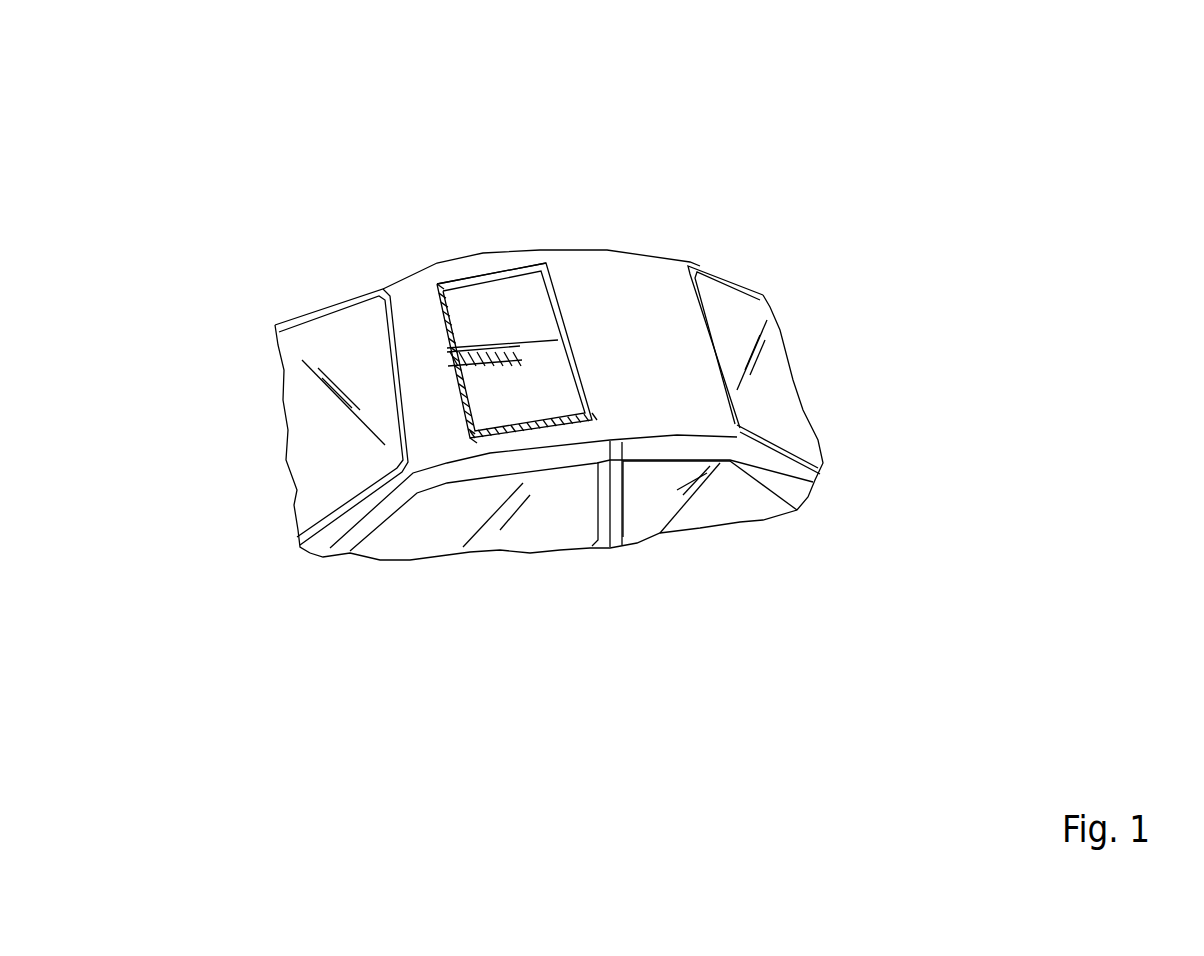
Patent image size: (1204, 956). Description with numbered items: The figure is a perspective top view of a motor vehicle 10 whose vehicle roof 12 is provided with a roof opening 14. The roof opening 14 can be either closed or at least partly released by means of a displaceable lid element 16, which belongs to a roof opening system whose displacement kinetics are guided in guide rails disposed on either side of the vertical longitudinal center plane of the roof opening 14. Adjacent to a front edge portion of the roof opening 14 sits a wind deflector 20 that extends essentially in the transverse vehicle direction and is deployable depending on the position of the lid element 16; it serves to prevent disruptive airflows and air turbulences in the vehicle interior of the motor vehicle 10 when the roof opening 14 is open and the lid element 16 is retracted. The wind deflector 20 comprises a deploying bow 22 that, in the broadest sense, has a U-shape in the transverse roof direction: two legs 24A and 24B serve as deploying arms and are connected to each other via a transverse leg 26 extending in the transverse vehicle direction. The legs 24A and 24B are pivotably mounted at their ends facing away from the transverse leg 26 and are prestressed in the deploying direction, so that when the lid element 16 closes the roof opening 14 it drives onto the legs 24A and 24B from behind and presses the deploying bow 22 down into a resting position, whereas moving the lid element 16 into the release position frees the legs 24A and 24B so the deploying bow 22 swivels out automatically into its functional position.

The motor vehicle 10 is at (570, 291).
The vehicle roof 12 is at (628, 292).
The roof opening 14 is at (495, 265).
The lid element 16 is at (542, 398).
The wind deflector 20 is at (432, 286).
The deploying bow 22 is at (457, 363).
The leg 24A is at (485, 427).
The leg 24B is at (435, 281).
The transverse leg 26 is at (465, 405).